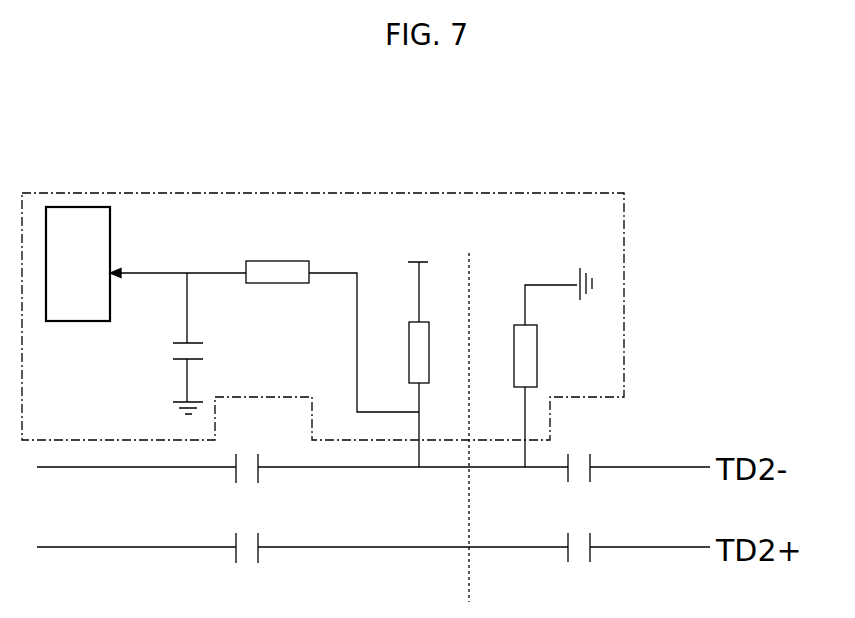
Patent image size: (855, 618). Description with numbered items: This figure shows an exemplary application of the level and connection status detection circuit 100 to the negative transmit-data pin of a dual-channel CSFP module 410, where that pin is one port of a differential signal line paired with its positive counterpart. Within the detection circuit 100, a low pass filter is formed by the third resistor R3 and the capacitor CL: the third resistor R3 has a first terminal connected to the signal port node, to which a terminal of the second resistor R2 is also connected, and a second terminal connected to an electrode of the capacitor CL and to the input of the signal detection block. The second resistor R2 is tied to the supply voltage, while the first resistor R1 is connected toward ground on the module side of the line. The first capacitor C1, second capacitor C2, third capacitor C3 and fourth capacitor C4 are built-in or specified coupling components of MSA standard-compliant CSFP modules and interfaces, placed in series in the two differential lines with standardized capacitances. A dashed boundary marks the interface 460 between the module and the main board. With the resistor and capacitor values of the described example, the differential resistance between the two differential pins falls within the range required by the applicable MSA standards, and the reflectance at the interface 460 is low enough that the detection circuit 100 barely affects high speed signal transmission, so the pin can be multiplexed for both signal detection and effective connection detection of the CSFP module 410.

The level detection circuit 100 is at (230, 192).
The dual-channel CSFP module 410 is at (692, 314).
The interface 460 is at (469, 576).
The first resistor R1 is at (558, 367).
The second resistor R2 is at (397, 350).
The third resistor R3 is at (332, 318).
The capacitor CL is at (160, 343).
The first capacitor C1 is at (585, 450).
The second capacitor C2 is at (245, 453).
The third capacitor C3 is at (583, 571).
The fourth capacitor C4 is at (250, 569).